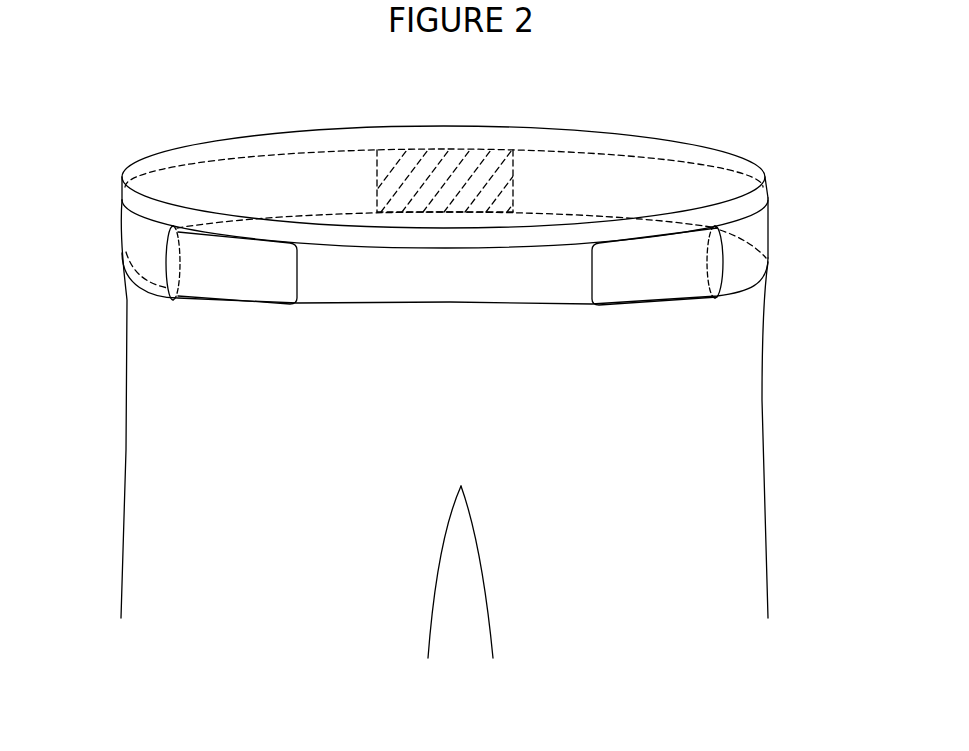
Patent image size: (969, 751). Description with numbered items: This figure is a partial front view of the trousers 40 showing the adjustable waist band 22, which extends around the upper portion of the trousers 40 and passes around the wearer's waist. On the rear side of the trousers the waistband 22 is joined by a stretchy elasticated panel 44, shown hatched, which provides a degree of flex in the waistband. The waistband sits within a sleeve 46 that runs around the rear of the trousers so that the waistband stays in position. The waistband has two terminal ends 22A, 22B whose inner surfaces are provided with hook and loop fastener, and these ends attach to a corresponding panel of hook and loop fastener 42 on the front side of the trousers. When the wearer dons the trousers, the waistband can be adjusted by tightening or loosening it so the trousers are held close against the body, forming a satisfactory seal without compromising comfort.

The adjustable waist band 22 is at (638, 305).
The terminal end of the waistband 22A is at (262, 285).
The terminal end of the waistband 22B is at (658, 280).
The trousers 40 is at (193, 441).
The panel of hook and loop fastener 42 is at (448, 279).
The elasticated panel 44 is at (422, 162).
The sleeve 46 is at (128, 240).